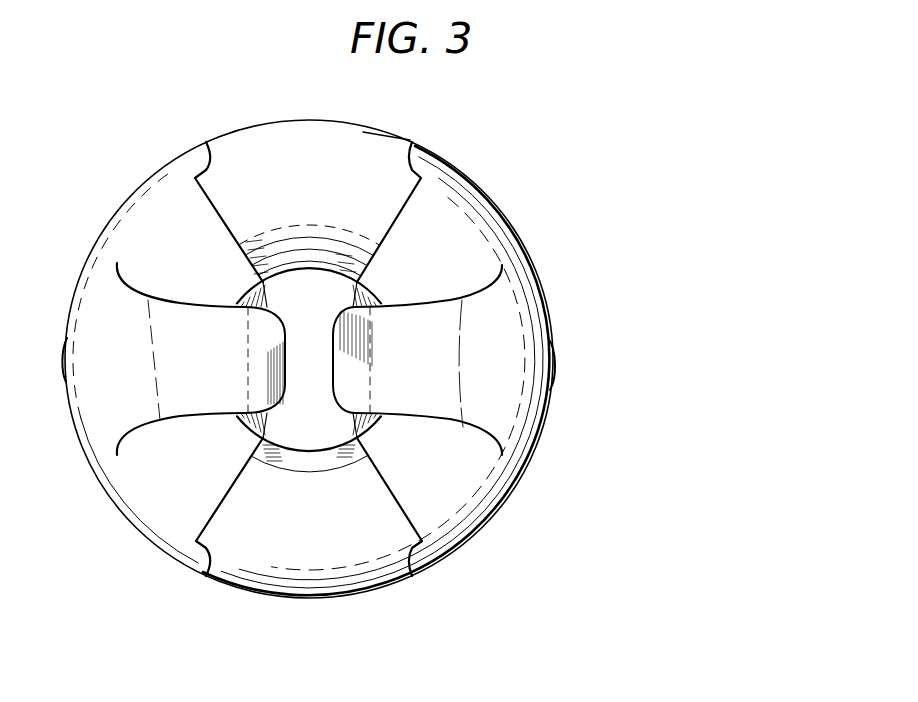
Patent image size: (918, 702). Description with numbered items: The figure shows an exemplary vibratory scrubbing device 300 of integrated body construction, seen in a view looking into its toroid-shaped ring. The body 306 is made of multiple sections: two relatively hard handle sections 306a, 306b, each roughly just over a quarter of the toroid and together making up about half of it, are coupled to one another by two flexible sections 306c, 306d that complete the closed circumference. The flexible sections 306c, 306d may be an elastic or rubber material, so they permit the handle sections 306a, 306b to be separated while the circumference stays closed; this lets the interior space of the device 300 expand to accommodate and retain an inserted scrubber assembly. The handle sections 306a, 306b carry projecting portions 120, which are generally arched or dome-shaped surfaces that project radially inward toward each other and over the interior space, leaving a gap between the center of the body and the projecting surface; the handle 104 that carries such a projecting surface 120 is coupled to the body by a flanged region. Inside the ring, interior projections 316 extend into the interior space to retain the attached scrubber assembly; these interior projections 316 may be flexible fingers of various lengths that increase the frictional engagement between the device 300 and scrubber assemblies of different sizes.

The vibratory scrubbing device 300 is at (485, 119).
The body 306 is at (481, 556).
The handle section 306a is at (445, 245).
The handle section 306b is at (190, 465).
The flexible section 306c is at (305, 533).
The flexible section 306d is at (295, 170).
The interior projections 316 is at (262, 307).
The projecting surface 120 is at (430, 352).
The handle 104 is at (393, 430).